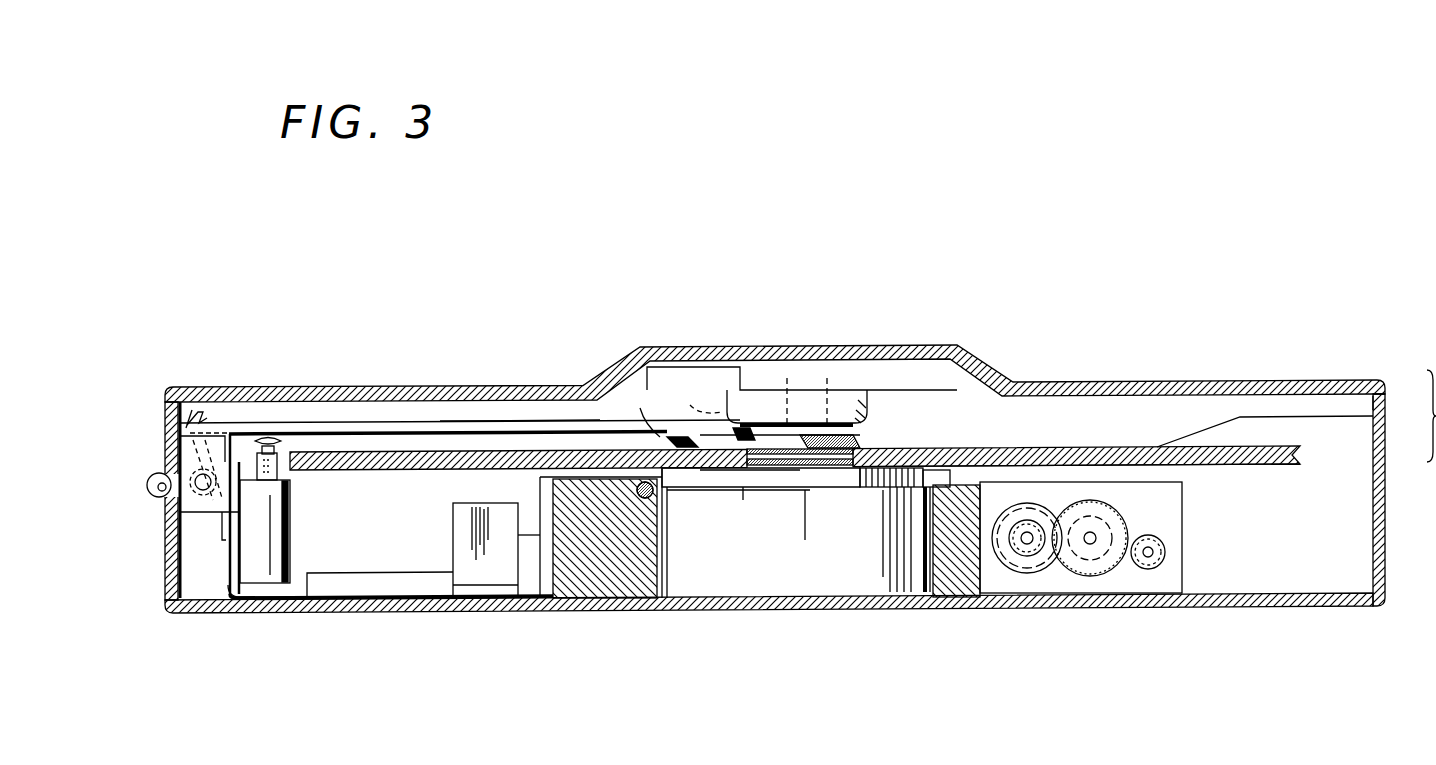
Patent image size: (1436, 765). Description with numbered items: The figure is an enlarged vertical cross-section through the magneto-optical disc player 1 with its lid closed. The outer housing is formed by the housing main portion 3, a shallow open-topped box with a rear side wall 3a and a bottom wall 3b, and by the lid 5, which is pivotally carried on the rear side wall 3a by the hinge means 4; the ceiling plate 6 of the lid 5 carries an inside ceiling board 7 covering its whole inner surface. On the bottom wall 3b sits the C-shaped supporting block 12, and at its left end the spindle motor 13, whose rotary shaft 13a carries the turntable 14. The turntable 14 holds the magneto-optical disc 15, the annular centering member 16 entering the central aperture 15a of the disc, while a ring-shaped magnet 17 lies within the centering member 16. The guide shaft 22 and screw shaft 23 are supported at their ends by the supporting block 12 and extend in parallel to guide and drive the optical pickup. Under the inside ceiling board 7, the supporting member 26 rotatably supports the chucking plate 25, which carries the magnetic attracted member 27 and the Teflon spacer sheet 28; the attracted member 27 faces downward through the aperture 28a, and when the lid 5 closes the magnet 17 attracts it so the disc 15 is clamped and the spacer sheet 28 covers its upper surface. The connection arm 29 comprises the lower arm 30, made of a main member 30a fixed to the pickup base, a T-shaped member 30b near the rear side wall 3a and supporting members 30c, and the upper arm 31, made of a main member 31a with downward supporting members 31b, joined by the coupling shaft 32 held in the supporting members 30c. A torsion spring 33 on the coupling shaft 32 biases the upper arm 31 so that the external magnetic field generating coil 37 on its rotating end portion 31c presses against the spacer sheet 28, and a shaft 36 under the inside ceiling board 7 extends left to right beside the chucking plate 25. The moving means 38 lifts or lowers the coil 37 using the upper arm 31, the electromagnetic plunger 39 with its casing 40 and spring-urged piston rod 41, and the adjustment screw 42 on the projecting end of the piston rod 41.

The magneto-optical disc player 1 is at (246, 312).
The housing main portion 3 is at (1386, 458).
The rear side wall 3a is at (173, 560).
The bottom wall 3b is at (604, 604).
The hinge means 4 is at (150, 486).
The lid 5 is at (1386, 398).
The ceiling plate 6 is at (1093, 378).
The inside ceiling board 7 is at (1386, 386).
The supporting block 12 is at (1182, 500).
The spindle motor 13 is at (697, 590).
The rotary shaft 13a is at (800, 490).
The turntable 14 is at (873, 478).
The magneto-optical disc 15 is at (1300, 461).
The central aperture 15a is at (747, 474).
The centering member 16 is at (860, 458).
The magnet 17 is at (838, 448).
The guide shaft 22 is at (661, 522).
The screw shaft 23 is at (1020, 548).
The chucking plate 25 is at (668, 437).
The supporting member 26 is at (873, 390).
The attracted member 27 is at (767, 472).
The spacer sheet 28 is at (1300, 447).
The aperture 28a is at (645, 415).
The connection arm 29 is at (422, 320).
The lower arm 30 is at (377, 578).
The main member 30a is at (413, 587).
The T-shaped member 30b is at (233, 570).
The supporting member 30c is at (177, 506).
The upper arm 31 is at (353, 423).
The main member 31a is at (523, 417).
The supporting member 31b is at (187, 445).
The rotating end portion 31c is at (1097, 404).
The coupling shaft 32 is at (205, 490).
The torsion spring 33 is at (176, 416).
The shaft 36 is at (703, 410).
The external magnetic field generating coil 37 is at (785, 394).
The moving means 38 is at (225, 420).
The electromagnetic plunger 39 is at (293, 523).
The casing 40 is at (293, 494).
The piston rod 41 is at (287, 455).
The adjustment screw 42 is at (280, 433).